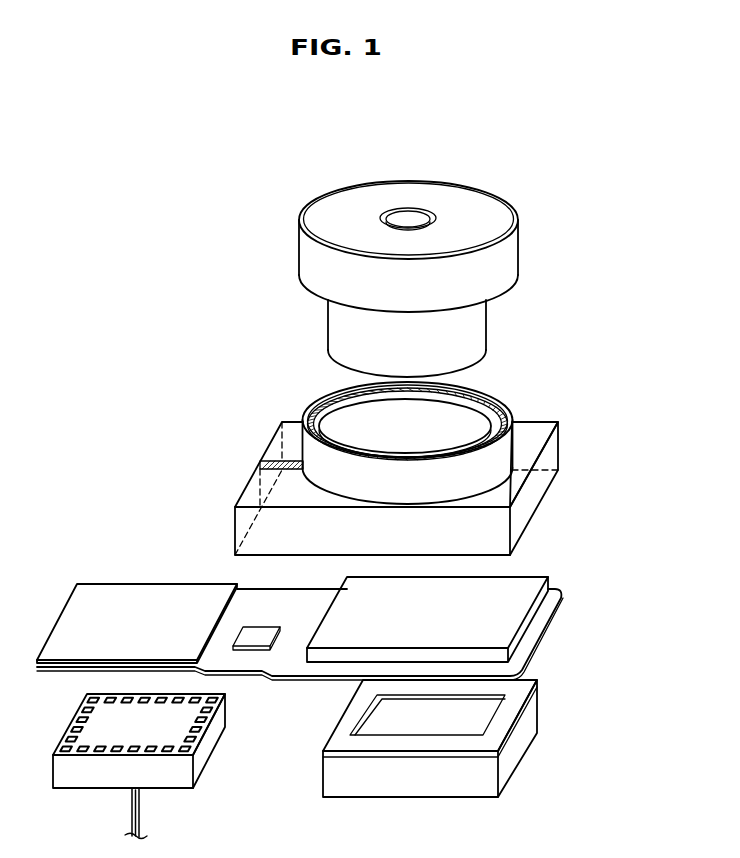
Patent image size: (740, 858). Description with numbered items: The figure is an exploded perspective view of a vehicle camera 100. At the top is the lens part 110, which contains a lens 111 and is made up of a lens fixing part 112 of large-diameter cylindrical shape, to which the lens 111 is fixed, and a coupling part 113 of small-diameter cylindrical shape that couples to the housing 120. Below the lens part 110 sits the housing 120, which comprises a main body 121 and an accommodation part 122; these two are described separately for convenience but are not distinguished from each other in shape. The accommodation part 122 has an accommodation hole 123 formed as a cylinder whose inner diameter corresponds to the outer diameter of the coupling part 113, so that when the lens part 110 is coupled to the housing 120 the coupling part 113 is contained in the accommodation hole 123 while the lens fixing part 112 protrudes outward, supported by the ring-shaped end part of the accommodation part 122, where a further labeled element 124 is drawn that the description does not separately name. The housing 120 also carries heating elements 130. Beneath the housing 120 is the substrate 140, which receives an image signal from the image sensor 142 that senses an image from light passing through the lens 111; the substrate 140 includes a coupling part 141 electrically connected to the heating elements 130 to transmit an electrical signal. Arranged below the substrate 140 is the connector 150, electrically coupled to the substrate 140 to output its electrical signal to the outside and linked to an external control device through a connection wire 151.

The vehicle camera 100 is at (330, 144).
The lens part 110 is at (535, 293).
The lens 111 is at (413, 217).
The lens fixing part 112 is at (506, 256).
The coupling part 113 is at (483, 318).
The housing 120 is at (560, 486).
The main body 121 is at (527, 498).
The accommodation part 122 is at (507, 447).
The accommodation hole 123 is at (357, 420).
The infrared filter / seat 124 is at (508, 410).
The heating elements 130 is at (273, 460).
The substrate 140 is at (562, 628).
The coupling part 141 is at (258, 630).
The image sensor 142 is at (513, 743).
The connector 150 is at (210, 742).
The connection wire 151 is at (140, 804).